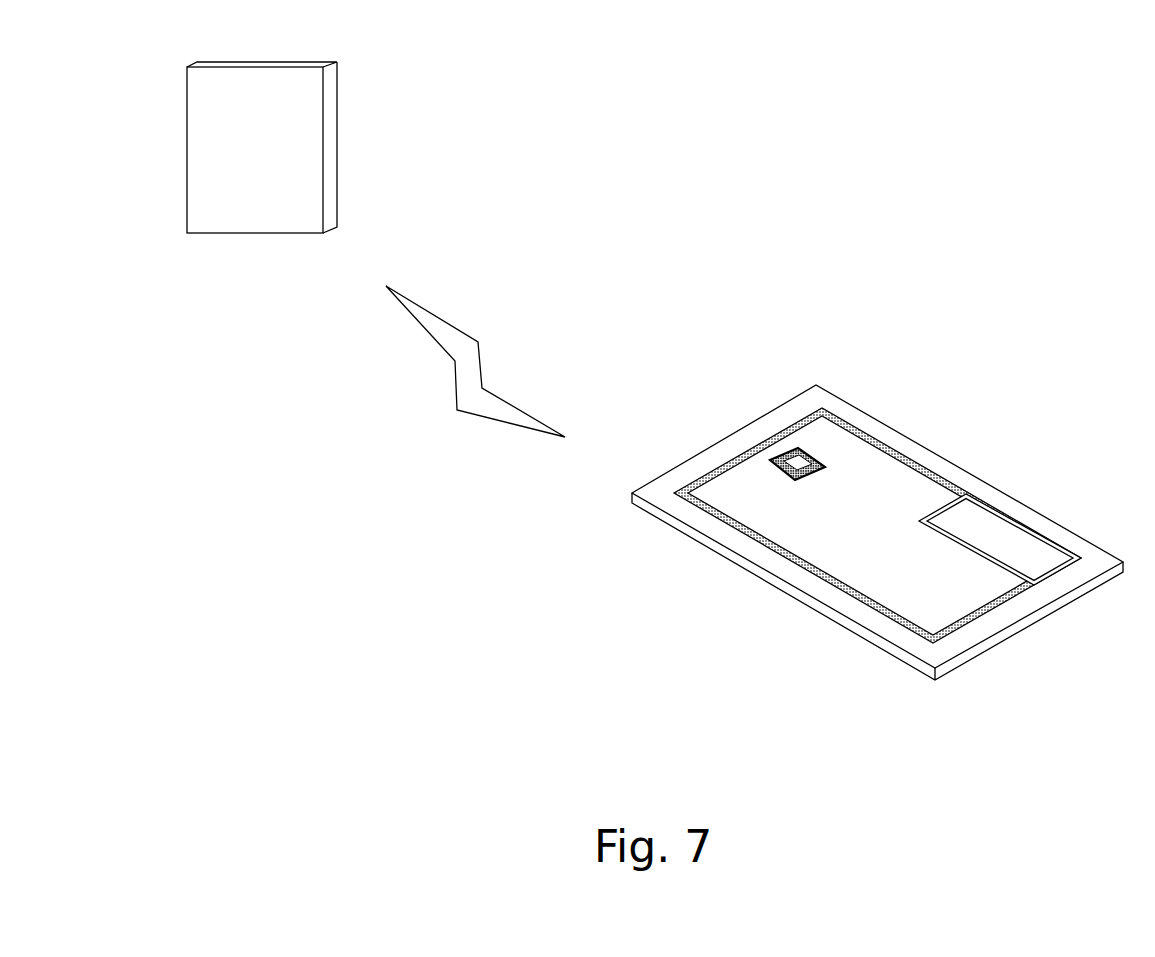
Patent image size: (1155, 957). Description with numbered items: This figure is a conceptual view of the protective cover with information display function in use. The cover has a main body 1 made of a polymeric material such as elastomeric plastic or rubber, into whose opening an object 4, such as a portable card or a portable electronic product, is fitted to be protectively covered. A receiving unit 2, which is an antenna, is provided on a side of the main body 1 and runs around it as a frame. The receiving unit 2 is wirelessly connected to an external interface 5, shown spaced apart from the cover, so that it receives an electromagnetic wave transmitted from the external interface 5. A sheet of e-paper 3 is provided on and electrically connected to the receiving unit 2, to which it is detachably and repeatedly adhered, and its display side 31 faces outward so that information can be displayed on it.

The main body 1 is at (706, 429).
The receiving unit 2 is at (749, 450).
The e-paper 3 is at (995, 508).
The display side 31 is at (1025, 543).
The object 4 is at (848, 455).
The external interface 5 is at (332, 107).